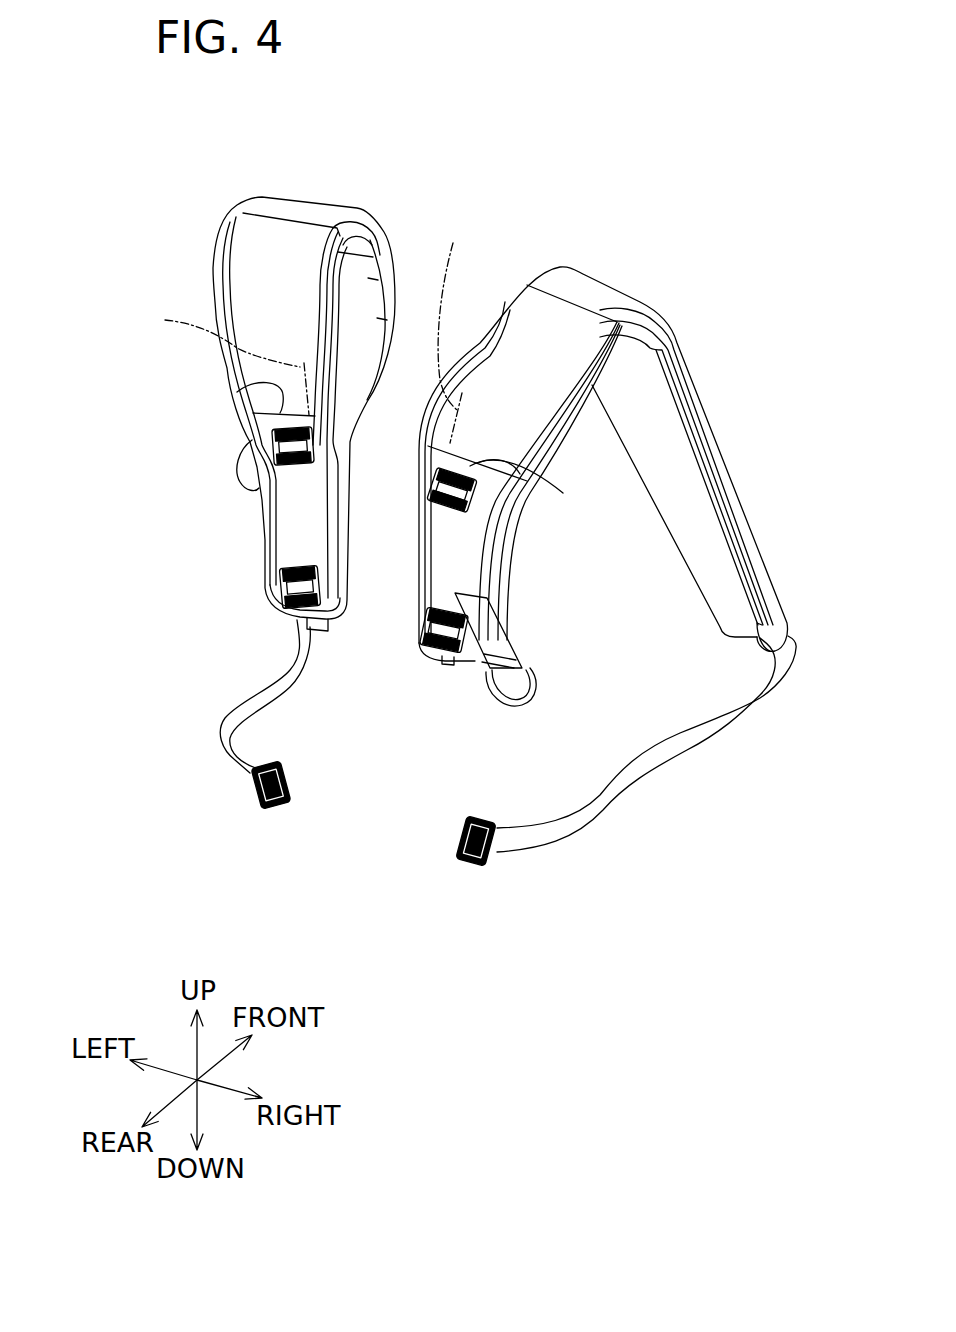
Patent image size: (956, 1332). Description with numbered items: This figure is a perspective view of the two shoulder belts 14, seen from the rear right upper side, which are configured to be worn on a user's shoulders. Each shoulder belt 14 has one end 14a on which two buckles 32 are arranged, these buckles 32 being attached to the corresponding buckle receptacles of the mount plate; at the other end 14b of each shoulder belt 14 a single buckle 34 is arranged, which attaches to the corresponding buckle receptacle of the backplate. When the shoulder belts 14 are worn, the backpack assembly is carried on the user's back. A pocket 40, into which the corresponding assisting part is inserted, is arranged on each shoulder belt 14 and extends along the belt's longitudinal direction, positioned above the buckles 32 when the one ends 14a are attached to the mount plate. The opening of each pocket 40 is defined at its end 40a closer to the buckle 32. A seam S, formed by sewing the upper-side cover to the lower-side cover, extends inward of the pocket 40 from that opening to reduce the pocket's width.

The shoulder belt 14 is at (308, 213).
The one end of the shoulder belt 14a is at (293, 525).
The other end of the shoulder belt 14b is at (240, 760).
The buckle 32 is at (273, 447).
The buckle 34 is at (263, 803).
The pocket 40 is at (283, 392).
The end of the pocket closer to the buckle 40a is at (237, 392).
The seam S is at (302, 330).